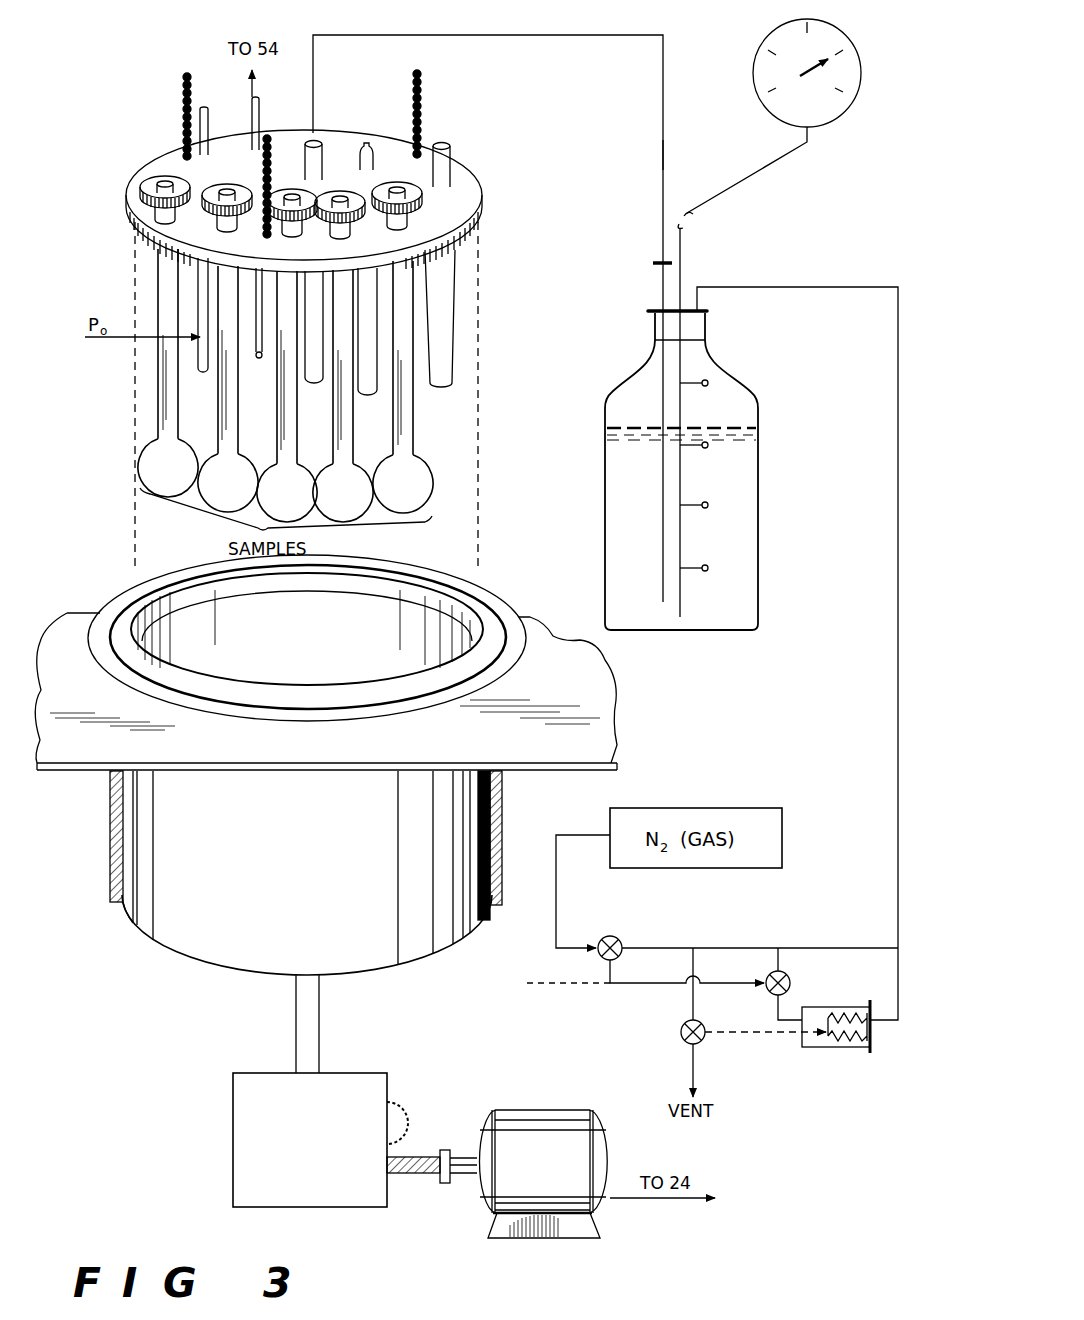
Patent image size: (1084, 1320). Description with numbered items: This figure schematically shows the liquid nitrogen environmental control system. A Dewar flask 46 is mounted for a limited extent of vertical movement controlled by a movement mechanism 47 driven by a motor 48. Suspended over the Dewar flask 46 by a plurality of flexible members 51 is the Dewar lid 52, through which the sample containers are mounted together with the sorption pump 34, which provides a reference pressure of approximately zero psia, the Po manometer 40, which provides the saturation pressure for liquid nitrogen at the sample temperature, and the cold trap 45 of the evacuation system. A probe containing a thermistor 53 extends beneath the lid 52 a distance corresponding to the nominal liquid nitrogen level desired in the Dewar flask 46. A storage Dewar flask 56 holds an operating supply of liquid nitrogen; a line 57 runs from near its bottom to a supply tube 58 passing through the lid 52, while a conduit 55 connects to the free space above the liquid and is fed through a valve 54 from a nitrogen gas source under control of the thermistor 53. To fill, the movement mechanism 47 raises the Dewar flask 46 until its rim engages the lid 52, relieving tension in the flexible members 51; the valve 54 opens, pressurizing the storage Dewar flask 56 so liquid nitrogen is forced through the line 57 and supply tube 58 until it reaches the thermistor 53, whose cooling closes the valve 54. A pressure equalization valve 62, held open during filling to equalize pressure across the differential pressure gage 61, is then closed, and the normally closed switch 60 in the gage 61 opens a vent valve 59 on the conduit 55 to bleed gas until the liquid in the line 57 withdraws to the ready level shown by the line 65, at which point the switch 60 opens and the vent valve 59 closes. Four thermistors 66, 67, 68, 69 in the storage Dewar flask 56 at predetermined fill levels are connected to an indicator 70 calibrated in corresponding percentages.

The sorption pump 34 is at (370, 398).
The Po manometer 40 is at (206, 372).
The cold trap 45 is at (434, 390).
The Dewar flask 46 is at (297, 873).
The movement mechanism 47 is at (373, 1072).
The motor 48 is at (533, 1110).
The flexible members 51 is at (183, 94).
The Dewar lid 52 is at (468, 186).
The thermistor 53 is at (257, 358).
The valve 54 is at (618, 938).
The conduit 55 is at (723, 948).
The storage Dewar flask 56 is at (605, 482).
The line 57 is at (663, 153).
The supply tube 58 is at (312, 386).
The vent valve 59 is at (681, 1037).
The switch 60 is at (822, 1028).
The differential pressure gage 61 is at (838, 1048).
The pressure equalization valve 62 is at (788, 975).
The line 65 is at (653, 263).
The thermistor 66 is at (710, 572).
The thermistor 67 is at (710, 509).
The thermistor 68 is at (710, 449).
The thermistor 69 is at (710, 387).
The indicator 70 is at (840, 118).